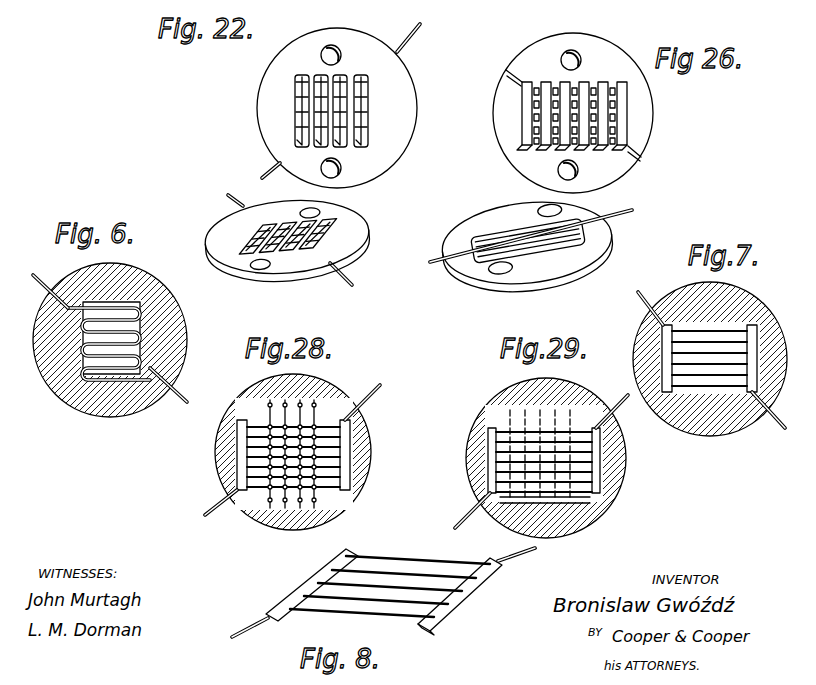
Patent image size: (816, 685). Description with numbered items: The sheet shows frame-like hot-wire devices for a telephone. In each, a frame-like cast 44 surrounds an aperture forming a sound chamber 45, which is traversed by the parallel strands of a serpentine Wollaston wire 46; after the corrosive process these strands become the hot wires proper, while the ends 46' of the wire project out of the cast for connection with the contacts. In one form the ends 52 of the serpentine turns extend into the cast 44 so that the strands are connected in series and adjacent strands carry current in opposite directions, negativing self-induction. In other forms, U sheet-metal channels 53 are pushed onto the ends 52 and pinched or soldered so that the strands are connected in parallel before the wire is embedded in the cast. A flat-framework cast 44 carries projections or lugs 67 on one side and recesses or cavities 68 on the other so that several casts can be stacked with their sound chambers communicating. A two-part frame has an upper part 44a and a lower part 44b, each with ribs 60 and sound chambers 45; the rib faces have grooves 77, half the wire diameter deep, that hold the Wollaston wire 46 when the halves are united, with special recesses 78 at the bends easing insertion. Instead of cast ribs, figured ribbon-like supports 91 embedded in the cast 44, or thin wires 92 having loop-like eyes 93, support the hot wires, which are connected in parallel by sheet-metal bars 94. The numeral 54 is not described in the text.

In FIG. 22, the frame-like cast 44 is at (258, 100).
In FIG. 6, the frame-like cast 44 is at (82, 400).
In FIG. 28, the frame-like cast 44 is at (345, 502).
In FIG. 29, the frame-like cast 44 is at (546, 458).
In FIG. 7, the frame-like cast 44 is at (740, 296).
In FIG. 26, the upper part of the frame 44a is at (640, 135).
In FIG. 26, the lower part of the frame 44b is at (596, 250).
In FIG. 26, the sound chamber 45 is at (604, 80).
In FIG. 6, the sound chamber 45 is at (122, 370).
In FIG. 7, the sound chamber 45 is at (703, 392).
In FIG. 22, the Wollaston wire 46 is at (256, 227).
In FIG. 26, the Wollaston wire 46 is at (524, 255).
In FIG. 28, the Wollaston wire 46 is at (292, 465).
In FIG. 29, the Wollaston wire 46 is at (541, 451).
In FIG. 7, the Wollaston wire 46 is at (722, 396).
In FIG. 8, the Wollaston wire 46 is at (390, 595).
In FIG. 22, the ends of the Wollaston wire 46' is at (334, 154).
In FIG. 6, the ends of the Wollaston wire 46' is at (100, 368).
In FIG. 29, the ends of the Wollaston wire 46' is at (487, 542).
In FIG. 7, the ends of the Wollaston wire 46' is at (702, 360).
In FIG. 8, the ends of the Wollaston wire 46' is at (380, 584).
In FIG. 6, the ends of the turns 52 is at (148, 321).
In FIG. 7, the U sheet-metal channels 53 is at (757, 340).
In FIG. 8, the U sheet-metal channels 53 is at (332, 576).
In FIG. 6, the recess in disc 54 is at (62, 368).
In FIG. 22, the ribs 60 is at (290, 255).
In FIG. 26, the ribs 60 is at (535, 130).
In FIG. 22, the projections or lugs 67 is at (333, 45).
In FIG. 26, the projections or lugs 67 is at (572, 50).
In FIG. 22, the recesses or cavities 68 is at (320, 214).
In FIG. 26, the recesses or cavities 68 is at (556, 212).
In FIG. 26, the grooves 77 is at (538, 82).
In FIG. 26, the special recesses 78 is at (530, 105).
In FIG. 28, the ribbon-like supports 91 is at (275, 408).
In FIG. 29, the thin wires 92 is at (572, 492).
In FIG. 29, the loop-like eyes 93 is at (590, 410).
In FIG. 28, the sheet-metal bars 94 is at (238, 440).
In FIG. 29, the sheet-metal bars 94 is at (490, 476).